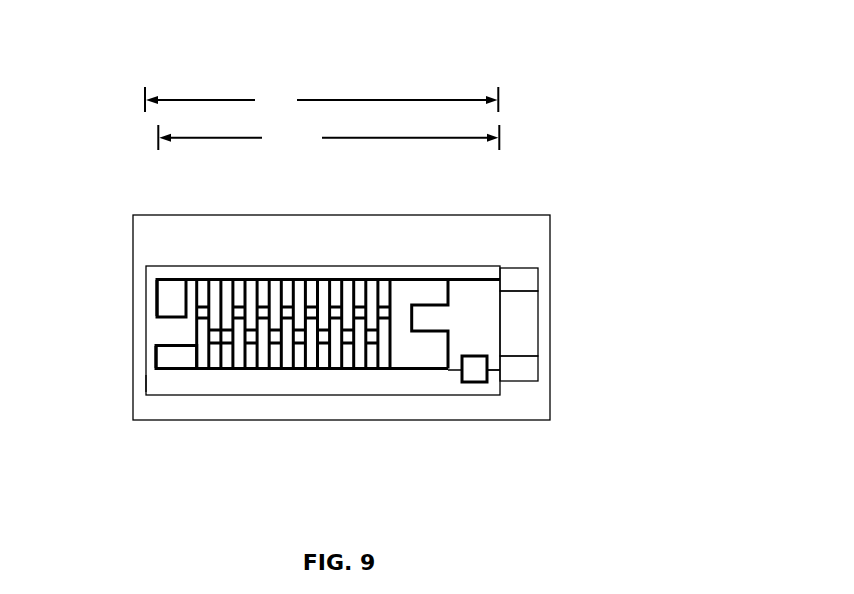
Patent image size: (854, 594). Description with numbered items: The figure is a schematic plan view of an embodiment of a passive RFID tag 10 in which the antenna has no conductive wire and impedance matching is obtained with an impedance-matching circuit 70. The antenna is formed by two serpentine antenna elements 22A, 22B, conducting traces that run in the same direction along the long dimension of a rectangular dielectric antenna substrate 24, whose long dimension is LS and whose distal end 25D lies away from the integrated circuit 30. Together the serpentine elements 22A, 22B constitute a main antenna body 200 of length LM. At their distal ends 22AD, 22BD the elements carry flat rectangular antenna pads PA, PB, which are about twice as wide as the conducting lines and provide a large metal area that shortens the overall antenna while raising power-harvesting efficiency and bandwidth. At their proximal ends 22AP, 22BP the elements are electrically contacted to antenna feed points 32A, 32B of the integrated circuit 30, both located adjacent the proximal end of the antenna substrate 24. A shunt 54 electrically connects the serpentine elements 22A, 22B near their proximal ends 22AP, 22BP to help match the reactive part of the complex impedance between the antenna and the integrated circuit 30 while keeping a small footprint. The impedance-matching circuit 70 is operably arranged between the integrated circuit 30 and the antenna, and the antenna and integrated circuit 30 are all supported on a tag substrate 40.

The passive RFID tag 10 is at (615, 58).
The serpentine antenna element 22A is at (428, 304).
The serpentine antenna element 22B is at (393, 374).
The distal end of serpentine antenna element 22A 22AD is at (148, 285).
The distal end of serpentine antenna element 22B 22BD is at (146, 352).
The proximal end of serpentine antenna element 22A 22AP is at (510, 280).
The proximal end of serpentine antenna element 22B 22BP is at (511, 371).
The antenna substrate 24 is at (297, 395).
The distal end of antenna substrate 25D is at (146, 383).
The integrated circuit 30 is at (507, 333).
The antenna feed point 32A is at (541, 279).
The antenna feed point 32B is at (540, 368).
The tag substrate 40 is at (515, 250).
The shunt 54 is at (438, 304).
The impedance-matching circuit 70 is at (473, 382).
The main antenna body 200 is at (228, 390).
The antenna pad PA is at (170, 293).
The antenna pad PB is at (170, 357).
The long dimension of antenna substrate LS is at (321, 100).
The length of serpentine antenna elements LM is at (328, 137).